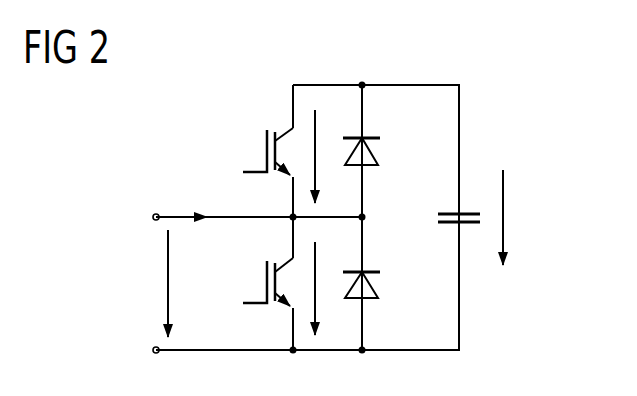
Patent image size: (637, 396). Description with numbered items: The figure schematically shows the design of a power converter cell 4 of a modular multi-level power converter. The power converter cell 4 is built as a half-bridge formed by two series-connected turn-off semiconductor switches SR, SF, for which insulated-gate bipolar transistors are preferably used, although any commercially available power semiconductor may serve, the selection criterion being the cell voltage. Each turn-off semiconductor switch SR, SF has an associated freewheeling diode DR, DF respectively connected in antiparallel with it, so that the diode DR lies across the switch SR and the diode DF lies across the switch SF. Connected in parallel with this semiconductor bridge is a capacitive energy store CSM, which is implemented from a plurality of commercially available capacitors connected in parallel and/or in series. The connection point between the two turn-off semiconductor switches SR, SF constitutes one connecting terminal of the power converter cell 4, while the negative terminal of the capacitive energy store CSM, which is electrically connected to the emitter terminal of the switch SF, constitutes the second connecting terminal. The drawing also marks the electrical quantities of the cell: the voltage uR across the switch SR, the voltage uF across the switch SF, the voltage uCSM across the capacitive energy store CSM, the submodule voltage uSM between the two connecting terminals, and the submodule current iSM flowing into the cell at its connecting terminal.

The power converter cell 4 is at (186, 150).
The turn-off semiconductor switch SR is at (258, 151).
The turn-off semiconductor switch SF is at (258, 281).
The freewheeling diode DR is at (380, 154).
The freewheeling diode DF is at (378, 287).
The capacitive energy store CSM is at (435, 217).
The voltage across reverse switch uR is at (299, 156).
The voltage across forward switch uF is at (299, 288).
The submodule capacitor voltage uCSM is at (534, 217).
The submodule voltage uSM is at (142, 283).
The submodule current iSM is at (190, 196).